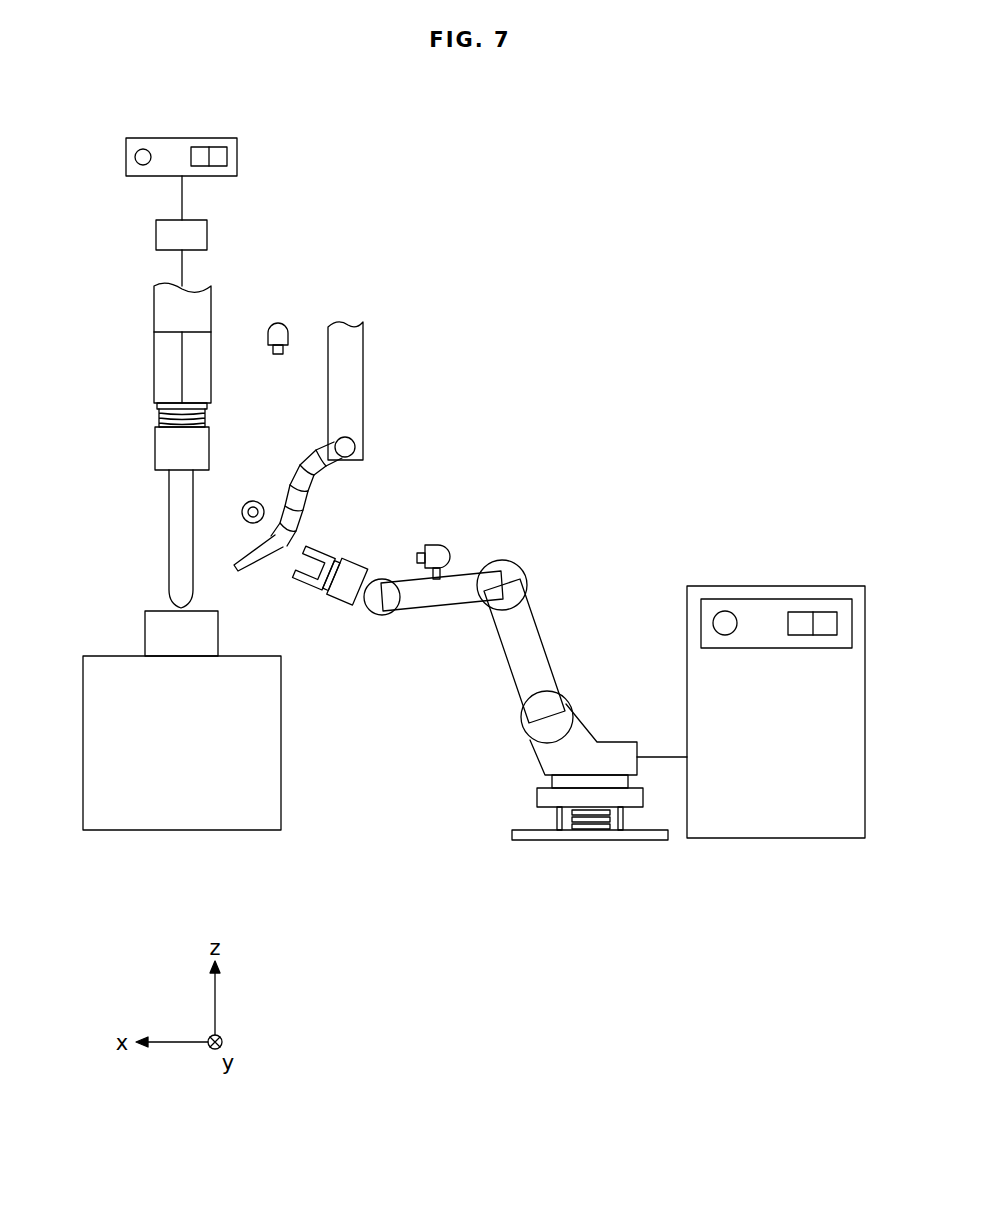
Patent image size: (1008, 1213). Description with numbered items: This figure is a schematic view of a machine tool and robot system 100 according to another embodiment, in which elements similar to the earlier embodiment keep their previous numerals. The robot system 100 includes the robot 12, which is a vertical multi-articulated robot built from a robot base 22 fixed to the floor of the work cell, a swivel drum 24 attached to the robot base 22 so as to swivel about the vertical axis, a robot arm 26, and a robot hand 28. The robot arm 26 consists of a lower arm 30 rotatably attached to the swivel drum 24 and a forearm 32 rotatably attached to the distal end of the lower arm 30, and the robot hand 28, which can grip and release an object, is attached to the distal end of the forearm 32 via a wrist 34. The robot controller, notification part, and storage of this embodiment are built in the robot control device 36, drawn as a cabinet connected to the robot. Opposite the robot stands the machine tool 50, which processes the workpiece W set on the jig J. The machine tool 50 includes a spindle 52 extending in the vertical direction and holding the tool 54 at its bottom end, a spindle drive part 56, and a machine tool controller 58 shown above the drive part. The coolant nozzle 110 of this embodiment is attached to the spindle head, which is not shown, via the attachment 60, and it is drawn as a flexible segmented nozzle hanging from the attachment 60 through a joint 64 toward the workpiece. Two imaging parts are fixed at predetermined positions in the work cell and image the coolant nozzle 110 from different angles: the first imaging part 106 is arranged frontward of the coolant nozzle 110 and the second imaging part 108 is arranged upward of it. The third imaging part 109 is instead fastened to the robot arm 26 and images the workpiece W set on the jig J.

The robot system 100 is at (662, 487).
The robot 12 is at (560, 533).
The robot base 22 is at (565, 822).
The swivel drum 24 is at (587, 752).
The robot arm 26 is at (370, 768).
The robot hand 28 is at (307, 580).
The lower arm 30 is at (510, 642).
The forearm 32 is at (455, 590).
The wrist 34 is at (380, 604).
The robot control device 36 is at (840, 586).
The machine tool 50 is at (272, 203).
The spindle 52 is at (162, 373).
The tool 54 is at (175, 506).
The spindle drive part 56 is at (158, 240).
The machine tool controller 58 is at (149, 138).
The attachment 60 is at (352, 342).
The joint 64 is at (353, 432).
The first imaging part 106 is at (258, 499).
The second imaging part 108 is at (285, 322).
The third imaging part 109 is at (440, 545).
The coolant nozzle 110 is at (316, 487).
The workpiece W is at (165, 637).
The jig J is at (158, 813).